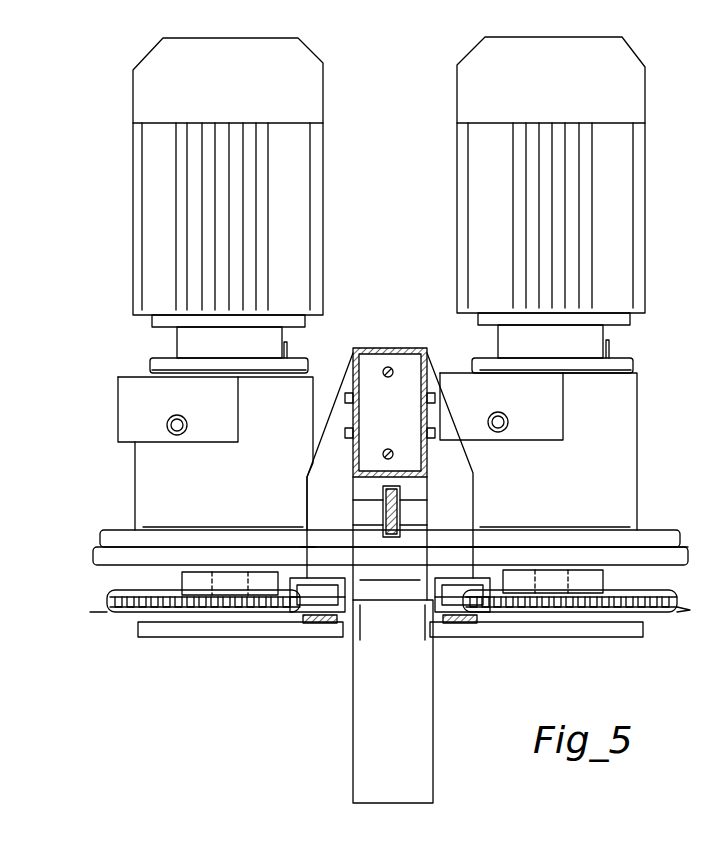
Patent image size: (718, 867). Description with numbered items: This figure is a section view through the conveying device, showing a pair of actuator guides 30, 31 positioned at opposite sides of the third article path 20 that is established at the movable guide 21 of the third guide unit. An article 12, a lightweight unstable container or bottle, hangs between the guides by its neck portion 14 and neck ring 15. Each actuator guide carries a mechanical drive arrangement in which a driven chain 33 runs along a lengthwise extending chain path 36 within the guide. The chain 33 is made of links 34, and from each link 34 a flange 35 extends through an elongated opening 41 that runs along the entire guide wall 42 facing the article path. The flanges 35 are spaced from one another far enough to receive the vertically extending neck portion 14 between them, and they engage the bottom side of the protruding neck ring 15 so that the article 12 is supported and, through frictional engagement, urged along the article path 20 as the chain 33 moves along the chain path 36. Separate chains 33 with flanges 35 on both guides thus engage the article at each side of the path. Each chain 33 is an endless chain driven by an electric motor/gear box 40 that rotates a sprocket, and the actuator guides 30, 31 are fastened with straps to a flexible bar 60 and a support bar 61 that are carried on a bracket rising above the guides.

The article 12 is at (428, 773).
The neck portion 14 is at (428, 520).
The neck ring 15 is at (380, 572).
The third article path 20 is at (370, 477).
The movable guide 21 is at (635, 373).
The actuator guide 30 is at (303, 550).
The actuator guide 31 is at (443, 558).
The driven chain 33 is at (287, 607).
The link 34 is at (342, 637).
The flange 35 is at (353, 645).
The chain path 36 is at (338, 552).
The electric motor/gear box 40 is at (327, 218).
The elongated opening 41 is at (375, 600).
The guide wall 42 is at (402, 512).
The flexible bar 60 is at (392, 572).
The support bar 61 is at (405, 362).